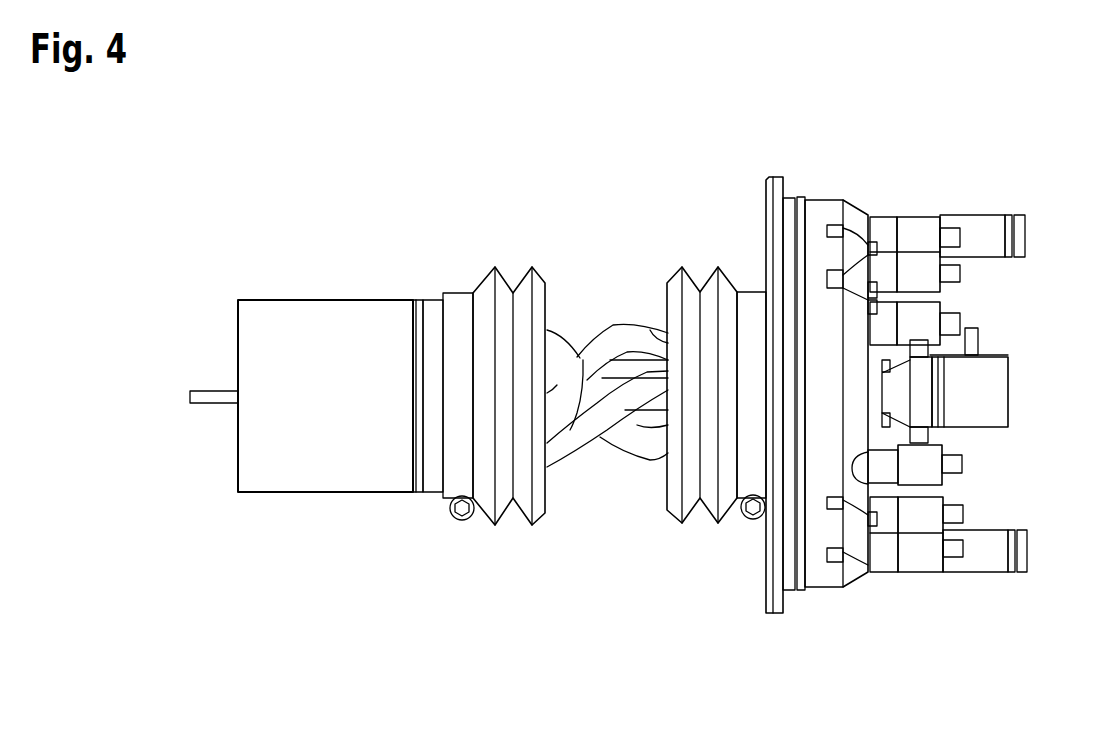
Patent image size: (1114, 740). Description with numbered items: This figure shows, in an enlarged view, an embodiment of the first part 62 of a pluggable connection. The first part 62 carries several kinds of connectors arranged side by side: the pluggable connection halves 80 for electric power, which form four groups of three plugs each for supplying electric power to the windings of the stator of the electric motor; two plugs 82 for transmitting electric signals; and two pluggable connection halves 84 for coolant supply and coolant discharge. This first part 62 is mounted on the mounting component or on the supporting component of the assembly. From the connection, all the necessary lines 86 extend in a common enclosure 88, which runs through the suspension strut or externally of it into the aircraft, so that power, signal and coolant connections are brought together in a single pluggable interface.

The first part of the pluggable connection 62 is at (834, 608).
The pluggable connection halves for electric power 80 is at (930, 462).
The plugs for transmitting electric signals 82 is at (995, 237).
The pluggable connection halves for coolant 84 is at (995, 393).
The lines 86 is at (613, 342).
The common enclosure 88 is at (322, 475).